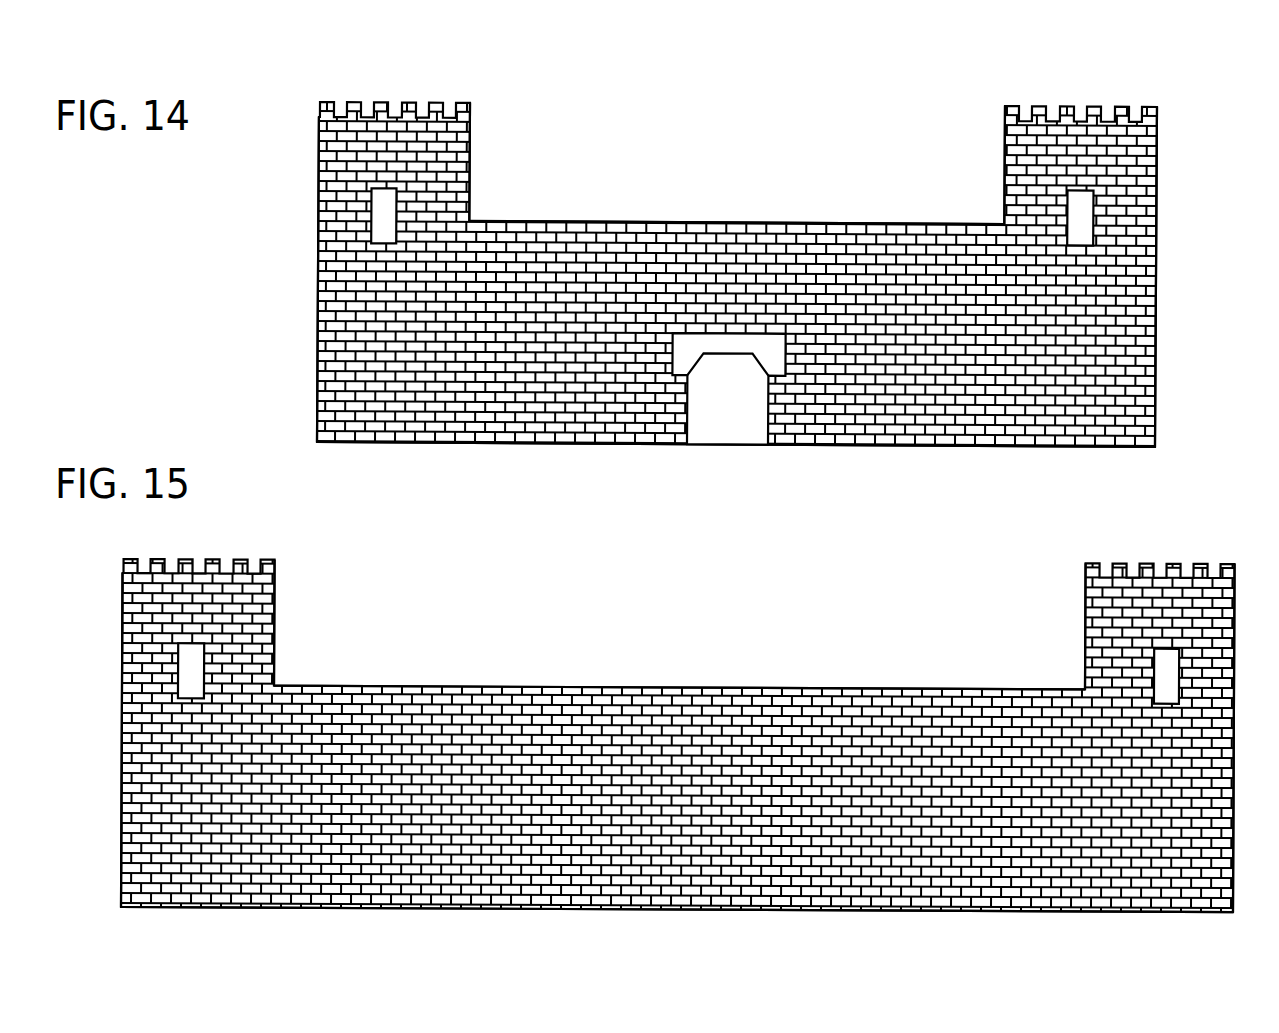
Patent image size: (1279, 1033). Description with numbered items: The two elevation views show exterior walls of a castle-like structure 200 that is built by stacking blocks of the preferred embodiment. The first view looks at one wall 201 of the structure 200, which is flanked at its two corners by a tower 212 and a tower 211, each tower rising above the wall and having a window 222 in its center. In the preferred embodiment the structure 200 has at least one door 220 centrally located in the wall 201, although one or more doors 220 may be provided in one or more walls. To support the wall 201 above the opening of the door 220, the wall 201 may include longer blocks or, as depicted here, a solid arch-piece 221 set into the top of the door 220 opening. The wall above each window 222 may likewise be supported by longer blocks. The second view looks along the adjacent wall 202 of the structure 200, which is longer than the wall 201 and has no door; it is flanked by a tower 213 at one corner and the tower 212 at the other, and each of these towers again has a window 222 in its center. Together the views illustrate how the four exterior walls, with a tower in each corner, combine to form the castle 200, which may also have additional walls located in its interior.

In FIG. 14, the castle-like structure 200 is at (802, 102).
In FIG. 15, the castle-like structure 200 is at (802, 590).
In FIG. 14, the wall 201 is at (1123, 347).
In FIG. 15, the wall 202 is at (645, 733).
In FIG. 14, the tower 211 is at (1137, 140).
In FIG. 14, the tower 212 is at (332, 140).
In FIG. 15, the tower 212 is at (1093, 607).
In FIG. 15, the tower 213 is at (255, 606).
In FIG. 14, the door 220 is at (740, 433).
In FIG. 14, the solid arch-piece 221 is at (690, 362).
In FIG. 14, the window 222 is at (377, 220).
In FIG. 15, the window 222 is at (187, 680).